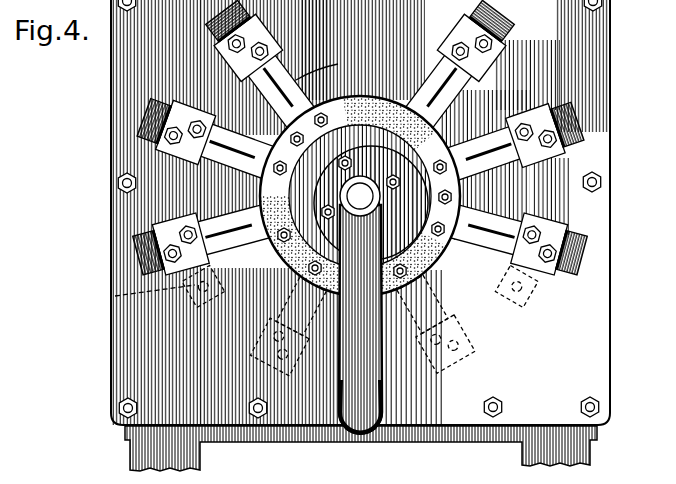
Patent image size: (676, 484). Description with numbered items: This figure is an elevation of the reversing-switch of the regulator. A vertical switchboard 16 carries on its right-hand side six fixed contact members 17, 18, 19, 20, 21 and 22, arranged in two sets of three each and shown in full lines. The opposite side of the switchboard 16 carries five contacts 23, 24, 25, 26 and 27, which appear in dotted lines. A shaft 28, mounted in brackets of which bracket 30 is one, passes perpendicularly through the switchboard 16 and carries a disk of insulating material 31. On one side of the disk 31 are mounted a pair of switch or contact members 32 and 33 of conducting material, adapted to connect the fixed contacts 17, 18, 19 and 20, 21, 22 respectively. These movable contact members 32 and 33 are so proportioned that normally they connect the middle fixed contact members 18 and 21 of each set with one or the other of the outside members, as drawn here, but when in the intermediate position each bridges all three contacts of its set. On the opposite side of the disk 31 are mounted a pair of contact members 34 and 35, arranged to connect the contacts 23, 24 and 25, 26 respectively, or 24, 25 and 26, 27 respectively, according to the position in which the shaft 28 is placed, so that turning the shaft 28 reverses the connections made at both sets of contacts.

The switchboard 16 is at (598, 33).
The fixed contact member 17 is at (160, 237).
The fixed contact member 18 is at (165, 138).
The fixed contact member 19 is at (222, 52).
The fixed contact member 20 is at (497, 43).
The fixed contact member 21 is at (554, 147).
The fixed contact member 22 is at (557, 230).
The contact 23 is at (109, 297).
The contact 24 is at (303, 340).
The contact 25 is at (382, 364).
The contact 26 is at (473, 348).
The contact 27 is at (522, 300).
The shaft 28 is at (362, 196).
The bracket 30 is at (378, 438).
The disk of insulating material 31 is at (351, 108).
The switch or contact member 32 is at (313, 82).
The switch or contact member 33 is at (497, 190).
The contact member 34 is at (272, 282).
The contact member 35 is at (438, 293).